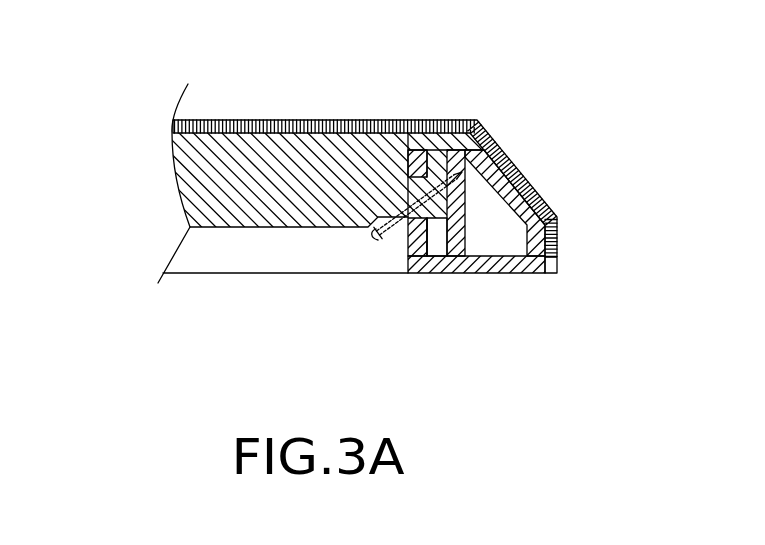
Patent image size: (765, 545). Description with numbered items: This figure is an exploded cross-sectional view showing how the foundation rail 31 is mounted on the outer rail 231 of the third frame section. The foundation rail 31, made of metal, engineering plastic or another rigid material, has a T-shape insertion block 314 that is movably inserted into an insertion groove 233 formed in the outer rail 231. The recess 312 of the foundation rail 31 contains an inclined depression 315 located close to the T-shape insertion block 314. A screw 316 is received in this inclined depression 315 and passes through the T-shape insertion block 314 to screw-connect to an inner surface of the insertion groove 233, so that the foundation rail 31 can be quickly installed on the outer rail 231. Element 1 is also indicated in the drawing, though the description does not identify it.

The film layer 1 is at (297, 120).
The foundation rail 31 is at (193, 148).
The recess 312 is at (203, 247).
The inclined depression 315 is at (370, 231).
The screw 316 is at (465, 195).
The outer rail 231 is at (492, 143).
The insertion groove 233 is at (421, 268).
The T-shape insertion block 314 is at (447, 260).